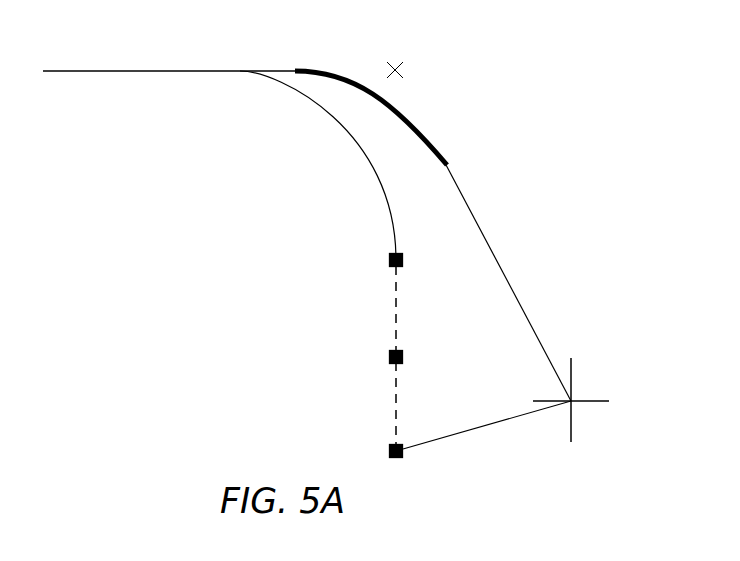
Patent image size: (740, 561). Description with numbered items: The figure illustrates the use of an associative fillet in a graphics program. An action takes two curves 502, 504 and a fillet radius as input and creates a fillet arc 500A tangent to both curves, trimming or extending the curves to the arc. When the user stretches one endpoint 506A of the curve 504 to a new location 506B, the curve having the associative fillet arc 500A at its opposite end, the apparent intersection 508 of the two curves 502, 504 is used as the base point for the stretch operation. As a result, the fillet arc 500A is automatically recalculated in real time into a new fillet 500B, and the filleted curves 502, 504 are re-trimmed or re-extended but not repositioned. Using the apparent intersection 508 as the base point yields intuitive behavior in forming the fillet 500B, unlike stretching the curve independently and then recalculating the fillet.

The curve 502 is at (95, 72).
The fillet arc 500A is at (306, 160).
The recalculated fillet arc 500B is at (437, 100).
The apparent intersection 508 is at (392, 54).
The curve 504 is at (396, 330).
The endpoint 506A is at (390, 445).
The location 506B is at (573, 395).